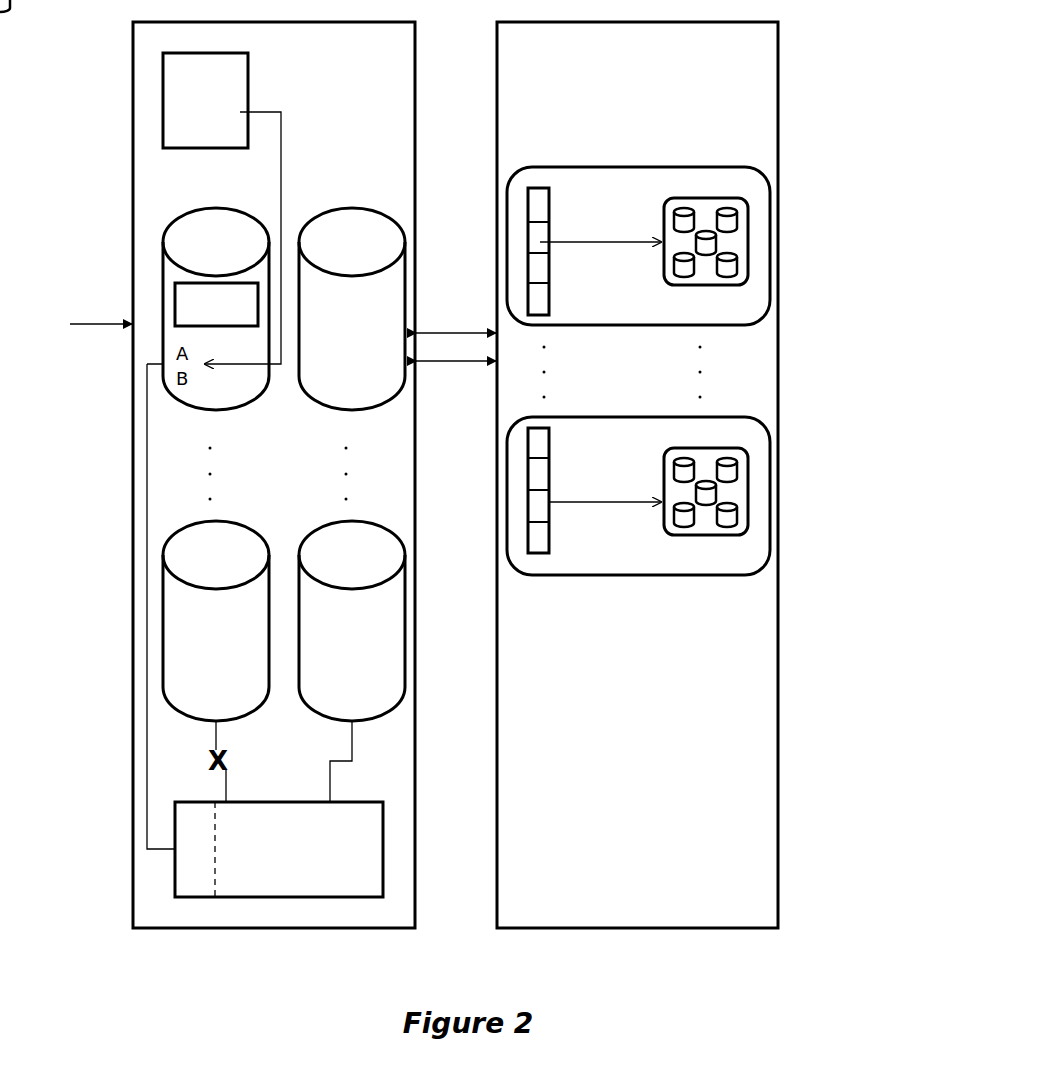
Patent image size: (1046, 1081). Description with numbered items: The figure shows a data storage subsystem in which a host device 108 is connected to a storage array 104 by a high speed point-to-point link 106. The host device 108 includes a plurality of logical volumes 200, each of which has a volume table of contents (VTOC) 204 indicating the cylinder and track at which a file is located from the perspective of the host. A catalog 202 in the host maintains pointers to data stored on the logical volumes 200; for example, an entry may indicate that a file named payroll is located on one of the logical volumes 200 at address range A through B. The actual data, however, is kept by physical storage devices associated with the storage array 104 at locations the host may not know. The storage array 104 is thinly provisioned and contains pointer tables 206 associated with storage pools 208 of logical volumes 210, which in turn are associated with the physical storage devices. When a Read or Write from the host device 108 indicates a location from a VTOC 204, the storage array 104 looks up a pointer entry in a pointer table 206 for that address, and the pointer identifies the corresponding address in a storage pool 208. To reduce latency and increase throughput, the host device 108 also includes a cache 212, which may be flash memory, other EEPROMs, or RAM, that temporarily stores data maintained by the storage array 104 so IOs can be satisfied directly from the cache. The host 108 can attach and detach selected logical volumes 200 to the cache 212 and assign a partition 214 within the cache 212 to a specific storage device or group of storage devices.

The storage array 104 is at (637, 475).
The high speed point-to-point link 106 is at (456, 347).
The host device 108 is at (274, 475).
The logical volumes 200 is at (284, 464).
The catalog 202 is at (162, 113).
The volume table of contents (VTOC) 204 is at (175, 283).
The pointer tables 206 is at (528, 475).
The storage pools 208 is at (725, 197).
The logical volumes of storage pools 210 is at (735, 272).
The cache 212 is at (279, 849).
The partition 214 is at (191, 869).